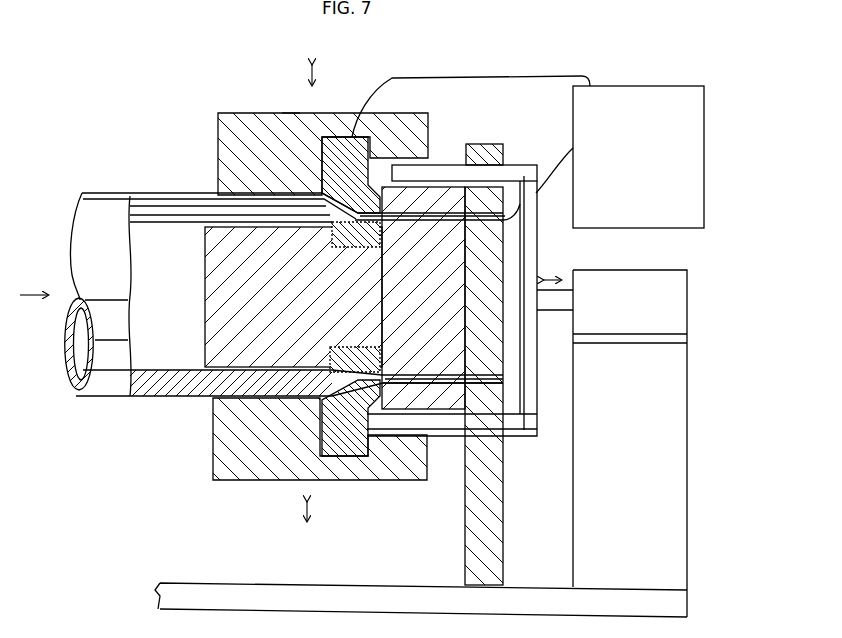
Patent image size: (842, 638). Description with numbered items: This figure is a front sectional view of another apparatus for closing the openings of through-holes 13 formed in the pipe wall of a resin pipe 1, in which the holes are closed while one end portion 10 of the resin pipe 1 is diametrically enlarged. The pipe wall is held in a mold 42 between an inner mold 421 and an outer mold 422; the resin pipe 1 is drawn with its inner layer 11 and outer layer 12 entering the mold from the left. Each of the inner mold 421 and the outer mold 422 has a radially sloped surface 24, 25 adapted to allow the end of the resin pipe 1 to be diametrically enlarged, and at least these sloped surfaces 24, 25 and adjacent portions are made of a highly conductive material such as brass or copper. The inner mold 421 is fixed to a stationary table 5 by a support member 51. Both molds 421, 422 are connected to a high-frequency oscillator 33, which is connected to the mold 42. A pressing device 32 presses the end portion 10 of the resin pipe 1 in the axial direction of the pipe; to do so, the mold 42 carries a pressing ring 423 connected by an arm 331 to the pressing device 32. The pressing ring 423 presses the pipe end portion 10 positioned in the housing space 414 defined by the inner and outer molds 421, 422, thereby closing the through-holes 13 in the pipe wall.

The resin pipe 1 is at (102, 192).
The inner tube 11 is at (193, 217).
The outer layer 12 is at (150, 192).
The through-holes 13 is at (173, 200).
The end portion 10 is at (299, 148).
The mold 42 is at (308, 42).
The inner mold 421 is at (243, 147).
The outer mold 422 is at (266, 135).
The pressing ring 423 is at (390, 113).
The housing space 414 is at (413, 158).
The arm 331 is at (455, 166).
The high-frequency oscillator 33 is at (685, 148).
The pressing device 32 is at (671, 307).
The support member 51 is at (488, 498).
The stationary table 5 is at (372, 605).
The sloped surface 25 is at (337, 483).
The sloped surface 24 is at (385, 487).